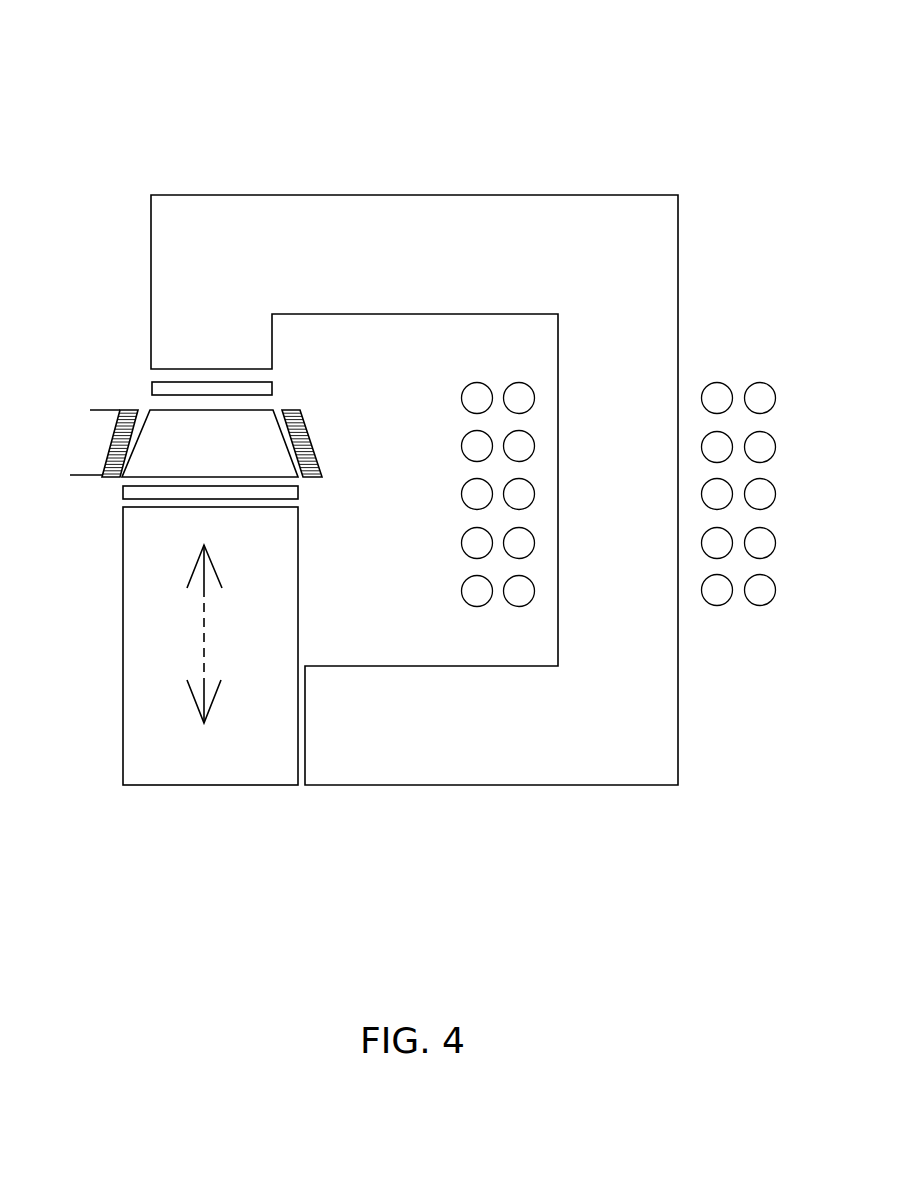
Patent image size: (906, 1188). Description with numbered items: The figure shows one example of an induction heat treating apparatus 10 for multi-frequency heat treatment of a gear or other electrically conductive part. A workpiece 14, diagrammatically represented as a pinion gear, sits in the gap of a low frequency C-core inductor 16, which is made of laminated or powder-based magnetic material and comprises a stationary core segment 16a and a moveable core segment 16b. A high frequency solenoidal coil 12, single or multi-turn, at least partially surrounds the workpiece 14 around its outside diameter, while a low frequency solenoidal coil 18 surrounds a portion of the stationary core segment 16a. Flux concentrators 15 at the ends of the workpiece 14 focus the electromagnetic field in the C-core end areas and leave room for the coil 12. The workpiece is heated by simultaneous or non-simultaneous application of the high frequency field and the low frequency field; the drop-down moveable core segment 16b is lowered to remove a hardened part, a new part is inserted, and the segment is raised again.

The induction heat treating apparatus 10 is at (460, 62).
The high frequency solenoidal coil 12 is at (120, 438).
The workpiece 14 is at (220, 451).
The flux concentrators 15 is at (260, 388).
The low frequency C-core inductor 16 is at (672, 163).
The stationary core segment 16a is at (583, 760).
The moveable core segment 16b is at (152, 767).
The low frequency solenoidal coil 18 is at (692, 605).